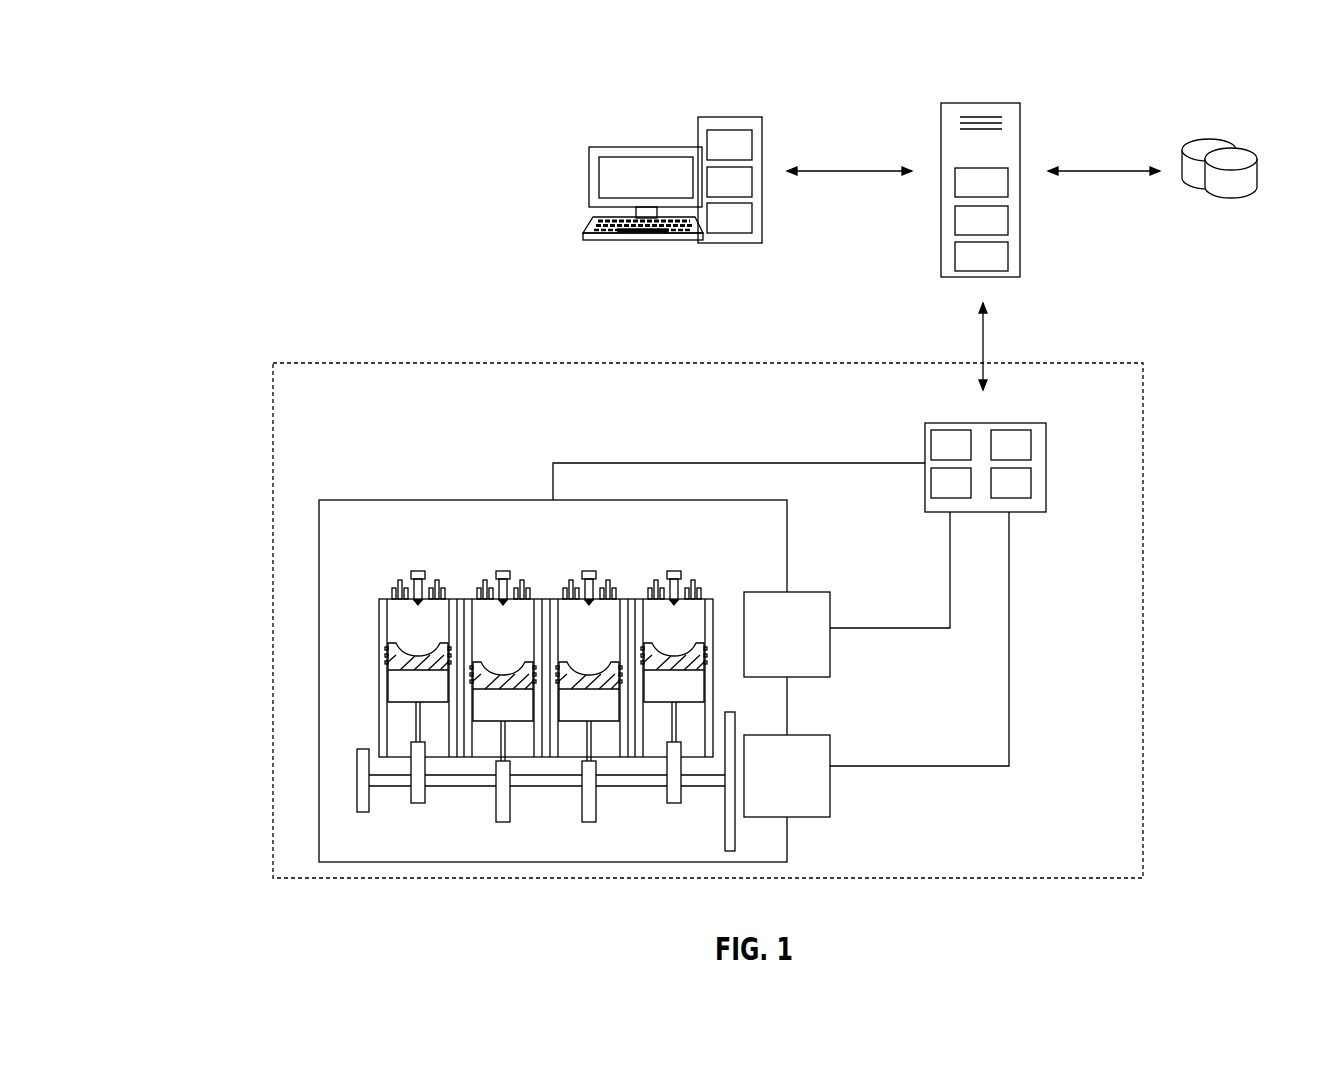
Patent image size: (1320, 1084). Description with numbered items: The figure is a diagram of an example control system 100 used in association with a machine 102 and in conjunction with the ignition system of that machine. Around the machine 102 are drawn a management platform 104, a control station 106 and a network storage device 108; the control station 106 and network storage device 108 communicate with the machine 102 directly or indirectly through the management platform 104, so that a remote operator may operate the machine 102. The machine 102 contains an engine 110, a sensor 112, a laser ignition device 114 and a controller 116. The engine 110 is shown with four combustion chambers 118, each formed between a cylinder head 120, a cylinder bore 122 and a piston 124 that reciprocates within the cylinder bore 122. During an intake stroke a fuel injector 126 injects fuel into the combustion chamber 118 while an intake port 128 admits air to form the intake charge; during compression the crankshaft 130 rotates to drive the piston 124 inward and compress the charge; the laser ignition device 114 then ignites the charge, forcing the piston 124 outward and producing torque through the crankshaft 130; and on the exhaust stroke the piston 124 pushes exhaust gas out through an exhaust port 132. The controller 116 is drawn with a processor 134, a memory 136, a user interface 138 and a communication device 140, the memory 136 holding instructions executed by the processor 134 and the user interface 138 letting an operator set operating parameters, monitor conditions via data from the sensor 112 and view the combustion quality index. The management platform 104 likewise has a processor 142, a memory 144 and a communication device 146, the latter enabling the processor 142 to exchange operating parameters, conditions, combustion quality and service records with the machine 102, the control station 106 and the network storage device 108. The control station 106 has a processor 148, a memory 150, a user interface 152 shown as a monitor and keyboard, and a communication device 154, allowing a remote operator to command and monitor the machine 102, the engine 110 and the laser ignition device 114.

The control system 100 is at (207, 80).
The machine 102 is at (273, 383).
The management platform 104 is at (1016, 103).
The control station 106 is at (728, 117).
The network storage device 108 is at (1210, 138).
The engine 110 is at (368, 500).
The sensor 112 is at (804, 787).
The laser ignition device 114 is at (804, 645).
The controller 116 is at (1025, 423).
The combustion chamber 118 is at (435, 637).
The cylinder head 120 is at (392, 599).
The cylinder bore 122 is at (400, 720).
The piston 124 is at (438, 697).
The fuel injector 126 is at (414, 568).
The intake port 128 is at (400, 579).
The crankshaft 130 is at (402, 788).
The exhaust port 132 is at (437, 580).
The processor 134 is at (968, 457).
The memory 136 is at (1028, 457).
The user interface 138 is at (968, 495).
The communication device 140 is at (1028, 495).
The processor 142 is at (998, 194).
The memory 144 is at (998, 232).
The communication device 146 is at (998, 268).
The processor 148 is at (747, 158).
The memory 150 is at (747, 195).
The user interface 152 is at (578, 153).
The communication device 154 is at (747, 231).